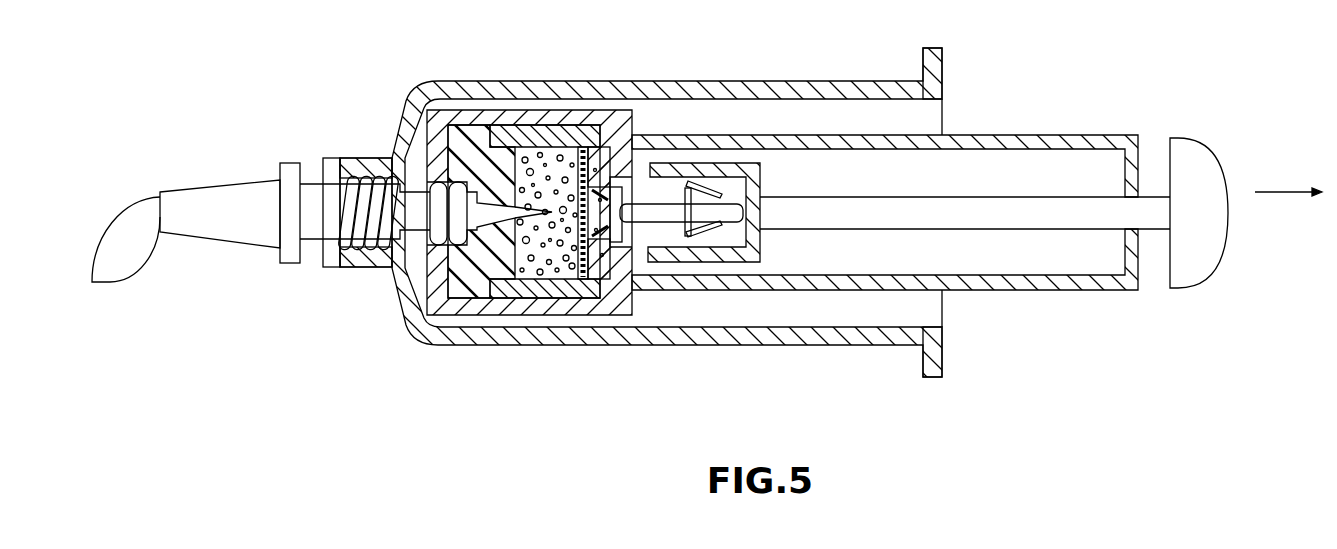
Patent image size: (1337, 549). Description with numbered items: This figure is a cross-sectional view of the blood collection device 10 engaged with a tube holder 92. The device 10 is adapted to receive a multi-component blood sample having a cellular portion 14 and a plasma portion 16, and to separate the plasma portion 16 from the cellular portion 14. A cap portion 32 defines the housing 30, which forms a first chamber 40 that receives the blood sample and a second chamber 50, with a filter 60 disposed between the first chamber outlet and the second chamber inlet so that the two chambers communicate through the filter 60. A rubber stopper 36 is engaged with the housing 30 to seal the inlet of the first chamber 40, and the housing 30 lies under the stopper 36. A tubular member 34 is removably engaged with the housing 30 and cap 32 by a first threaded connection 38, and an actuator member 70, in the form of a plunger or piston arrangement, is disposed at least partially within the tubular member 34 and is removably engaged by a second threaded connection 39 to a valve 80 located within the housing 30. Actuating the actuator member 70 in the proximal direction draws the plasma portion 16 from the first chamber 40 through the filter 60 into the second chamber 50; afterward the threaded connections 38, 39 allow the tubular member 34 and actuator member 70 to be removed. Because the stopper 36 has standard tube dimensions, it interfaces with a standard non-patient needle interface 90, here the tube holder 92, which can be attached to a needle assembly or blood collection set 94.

The blood collection device 10 is at (1014, 318).
The cellular portion 14 is at (536, 148).
The plasma portion 16 is at (598, 160).
The housing 30 is at (520, 262).
The cap portion 32 is at (467, 289).
The tubular member 34 is at (746, 132).
The rubber stopper 36 is at (468, 262).
The first threaded connection 38 is at (635, 273).
The second threaded connection 39 is at (683, 260).
The first chamber 40 is at (502, 272).
The second chamber 50 is at (583, 262).
The filter 60 is at (553, 280).
The actuator member 70 is at (848, 190).
The valve 80 is at (659, 239).
The non-patient needle interface 90 is at (356, 136).
The tube holder 92 is at (897, 80).
The needle assembly/blood collection set 94 is at (97, 200).